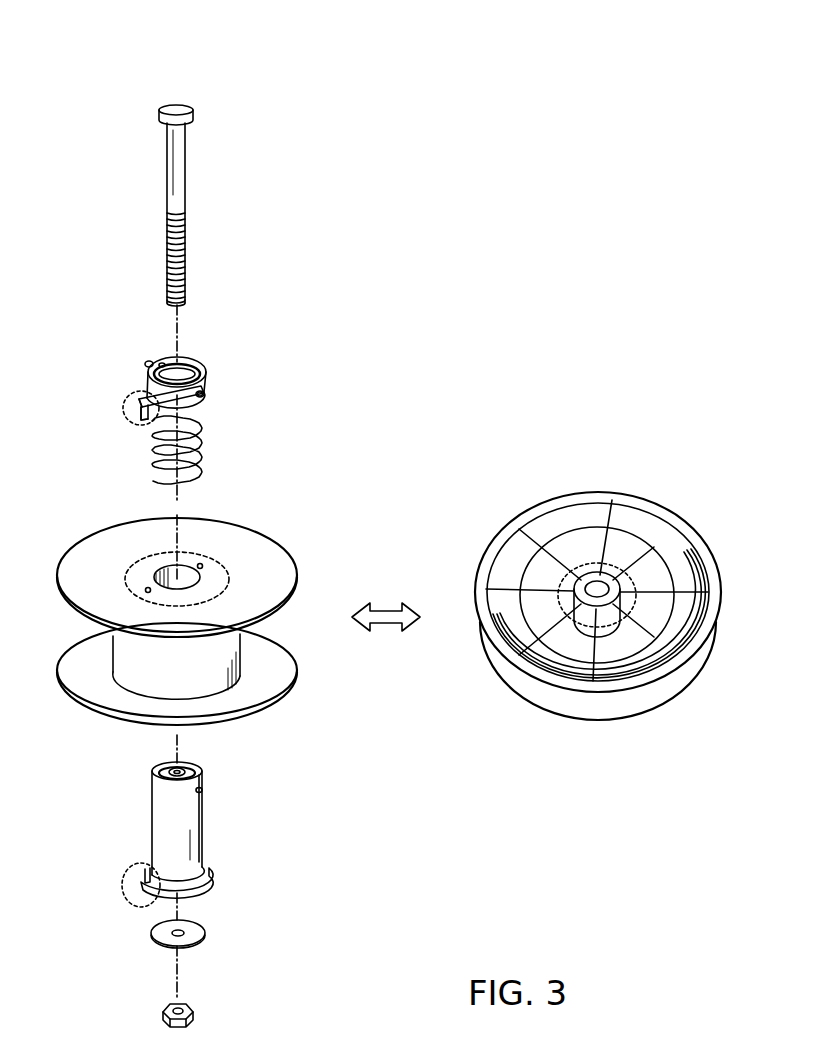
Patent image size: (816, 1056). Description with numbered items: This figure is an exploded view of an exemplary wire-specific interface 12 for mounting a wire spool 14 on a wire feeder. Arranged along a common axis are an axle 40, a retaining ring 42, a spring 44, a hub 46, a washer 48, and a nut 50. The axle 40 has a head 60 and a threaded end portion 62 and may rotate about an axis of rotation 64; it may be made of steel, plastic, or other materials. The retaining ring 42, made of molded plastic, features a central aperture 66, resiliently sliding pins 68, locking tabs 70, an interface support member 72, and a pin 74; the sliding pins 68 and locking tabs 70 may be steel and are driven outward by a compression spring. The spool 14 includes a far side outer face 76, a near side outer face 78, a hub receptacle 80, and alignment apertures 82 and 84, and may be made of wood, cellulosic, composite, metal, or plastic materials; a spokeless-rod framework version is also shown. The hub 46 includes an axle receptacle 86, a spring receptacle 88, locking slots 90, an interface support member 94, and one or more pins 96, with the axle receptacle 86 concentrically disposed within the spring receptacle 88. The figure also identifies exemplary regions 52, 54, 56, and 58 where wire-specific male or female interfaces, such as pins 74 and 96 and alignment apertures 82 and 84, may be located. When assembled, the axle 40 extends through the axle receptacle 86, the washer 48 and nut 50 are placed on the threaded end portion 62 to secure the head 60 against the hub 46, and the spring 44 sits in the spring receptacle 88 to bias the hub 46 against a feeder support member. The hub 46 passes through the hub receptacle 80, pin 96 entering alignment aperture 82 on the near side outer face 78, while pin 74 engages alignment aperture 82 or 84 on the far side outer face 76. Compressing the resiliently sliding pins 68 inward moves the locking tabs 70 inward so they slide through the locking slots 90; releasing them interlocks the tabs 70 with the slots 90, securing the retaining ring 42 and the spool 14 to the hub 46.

The wire-specific interface 12 is at (72, 102).
The spool 14 is at (365, 616).
The axle 40 is at (216, 198).
The retaining ring 42 is at (188, 403).
The spring 44 is at (204, 435).
The hub 46 is at (176, 849).
The washer 48 is at (206, 935).
The nut 50 is at (196, 1017).
The region 52 is at (135, 401).
The region 54 is at (228, 580).
The region 56 is at (128, 902).
The region 58 is at (613, 565).
The head 60 is at (178, 106).
The threaded end portion 62 is at (182, 272).
The axis of rotation 64 is at (180, 317).
The central aperture 66 is at (184, 371).
The resiliently sliding pins 68 is at (204, 396).
The locking tabs 70 is at (163, 357).
The interface support member 72 is at (153, 426).
The pin 74 is at (143, 412).
The far side outer face 76 is at (250, 553).
The near side outer face 78 is at (272, 704).
The hub receptacle 80 is at (167, 576).
The alignment aperture 82 is at (146, 589).
The alignment aperture 84 is at (201, 563).
The axle receptacle 86 is at (192, 766).
The spring receptacle 88 is at (160, 771).
The locking slots 90 is at (202, 791).
The interface support member 94 is at (158, 893).
The pin 96 is at (150, 870).